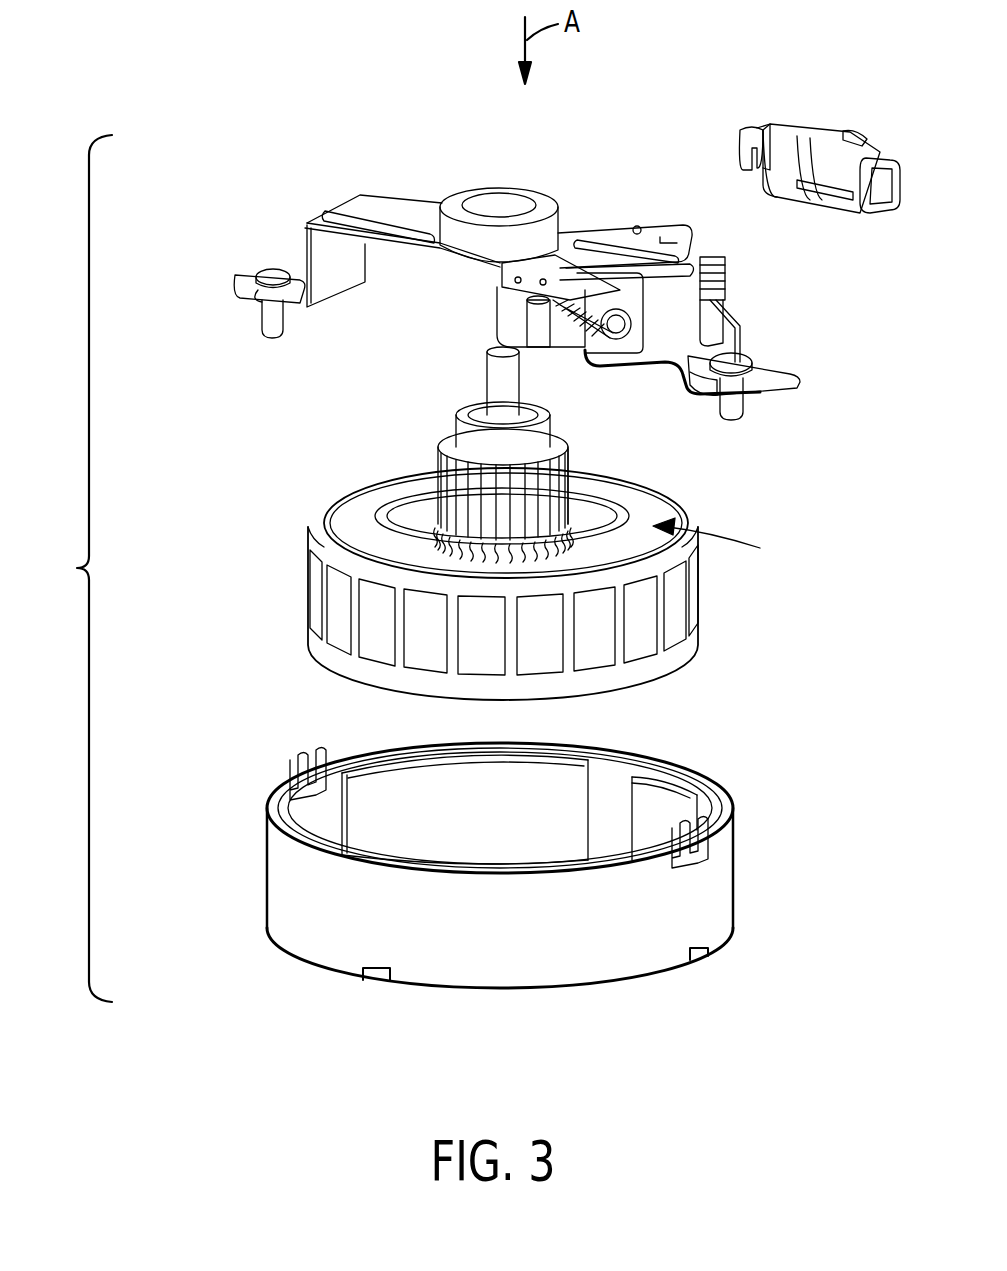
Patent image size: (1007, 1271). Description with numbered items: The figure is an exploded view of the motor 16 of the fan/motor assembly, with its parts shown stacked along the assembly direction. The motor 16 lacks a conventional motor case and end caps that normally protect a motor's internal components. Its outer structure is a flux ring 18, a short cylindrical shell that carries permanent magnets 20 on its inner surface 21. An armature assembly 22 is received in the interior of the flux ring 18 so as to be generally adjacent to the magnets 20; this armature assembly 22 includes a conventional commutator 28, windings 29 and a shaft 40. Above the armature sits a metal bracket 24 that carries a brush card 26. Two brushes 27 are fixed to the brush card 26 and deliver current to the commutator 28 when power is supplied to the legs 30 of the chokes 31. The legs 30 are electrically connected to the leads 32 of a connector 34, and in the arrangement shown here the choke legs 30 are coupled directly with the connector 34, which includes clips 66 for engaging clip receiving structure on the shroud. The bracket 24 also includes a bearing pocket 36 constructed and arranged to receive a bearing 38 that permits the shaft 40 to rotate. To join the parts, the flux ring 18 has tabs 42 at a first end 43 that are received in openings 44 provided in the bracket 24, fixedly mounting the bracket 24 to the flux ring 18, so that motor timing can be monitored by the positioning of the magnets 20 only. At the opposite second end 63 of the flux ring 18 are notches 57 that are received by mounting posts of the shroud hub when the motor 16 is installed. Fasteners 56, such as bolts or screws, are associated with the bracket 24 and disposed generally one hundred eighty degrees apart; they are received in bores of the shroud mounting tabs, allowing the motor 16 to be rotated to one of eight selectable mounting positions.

The motor 16 is at (76, 568).
The flux ring 18 is at (318, 938).
The permanent magnets 20 is at (573, 807).
The inner surface 21 is at (607, 828).
The armature assembly 22 is at (718, 542).
The metal bracket 24 is at (385, 218).
The brush card 26 is at (533, 263).
The brushes 27 is at (503, 297).
The commutator 28 is at (568, 472).
The windings 29 is at (650, 494).
The legs 30 is at (793, 374).
The chokes 31 is at (590, 350).
The leads 32 is at (898, 174).
The connector 34 is at (808, 145).
The bearing pocket 36 is at (548, 196).
The bearing 38 is at (466, 440).
The shaft 40 is at (486, 370).
The tabs 42 is at (332, 757).
The first end 43 is at (578, 748).
The openings 44 is at (740, 330).
The fasteners 56 is at (266, 275).
The notches 57 is at (380, 977).
The second end 63 is at (518, 992).
The clips 66 is at (775, 123).